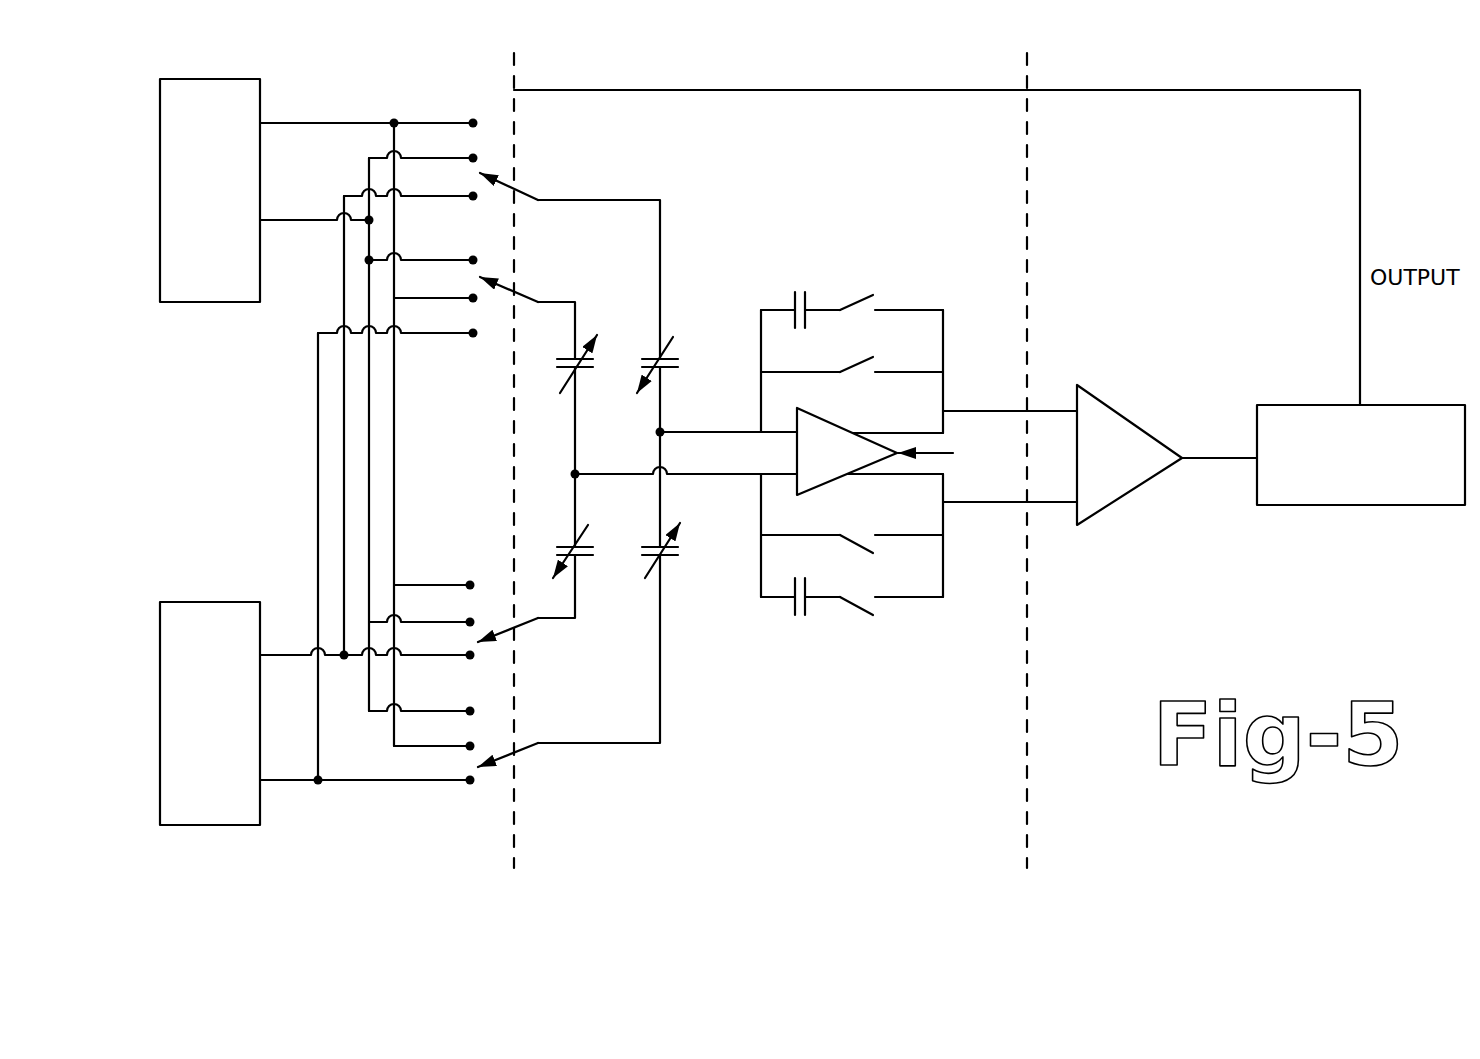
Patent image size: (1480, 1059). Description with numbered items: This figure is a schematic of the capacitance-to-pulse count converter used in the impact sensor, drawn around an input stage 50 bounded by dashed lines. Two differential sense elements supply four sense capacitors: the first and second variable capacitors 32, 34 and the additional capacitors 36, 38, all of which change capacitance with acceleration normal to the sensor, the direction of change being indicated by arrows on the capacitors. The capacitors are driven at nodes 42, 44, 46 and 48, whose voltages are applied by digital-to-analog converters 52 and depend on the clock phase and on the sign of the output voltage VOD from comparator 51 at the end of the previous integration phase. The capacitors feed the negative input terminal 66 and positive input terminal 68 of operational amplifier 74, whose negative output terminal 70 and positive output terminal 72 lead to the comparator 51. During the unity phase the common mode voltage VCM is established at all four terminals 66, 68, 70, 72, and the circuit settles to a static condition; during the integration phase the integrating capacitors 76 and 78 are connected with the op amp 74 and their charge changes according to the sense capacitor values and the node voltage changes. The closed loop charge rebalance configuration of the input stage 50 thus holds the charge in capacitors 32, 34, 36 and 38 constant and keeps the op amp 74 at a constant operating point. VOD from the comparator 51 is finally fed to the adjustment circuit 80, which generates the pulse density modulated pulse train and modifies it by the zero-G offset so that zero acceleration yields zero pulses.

The first variable capacitor 32 is at (583, 375).
The second variable capacitor 34 is at (585, 558).
The additional capacitor 36 is at (678, 355).
The additional capacitor 38 is at (672, 560).
The node 42 is at (575, 302).
The node 44 is at (577, 620).
The node 46 is at (660, 200).
The node 48 is at (662, 745).
The input stage 50 is at (767, 540).
The comparator 51 is at (1123, 498).
The digital-to-analog converter 52 is at (212, 302).
The negative input terminal 66 is at (722, 430).
The positive input terminal 68 is at (742, 478).
The negative output terminal 70 is at (1048, 503).
The positive output terminal 72 is at (1052, 411).
The operational amplifier 74 is at (825, 485).
The integrating capacitor 76 is at (812, 300).
The integrating capacitor 78 is at (810, 608).
The adjustment circuit 80 is at (1387, 493).